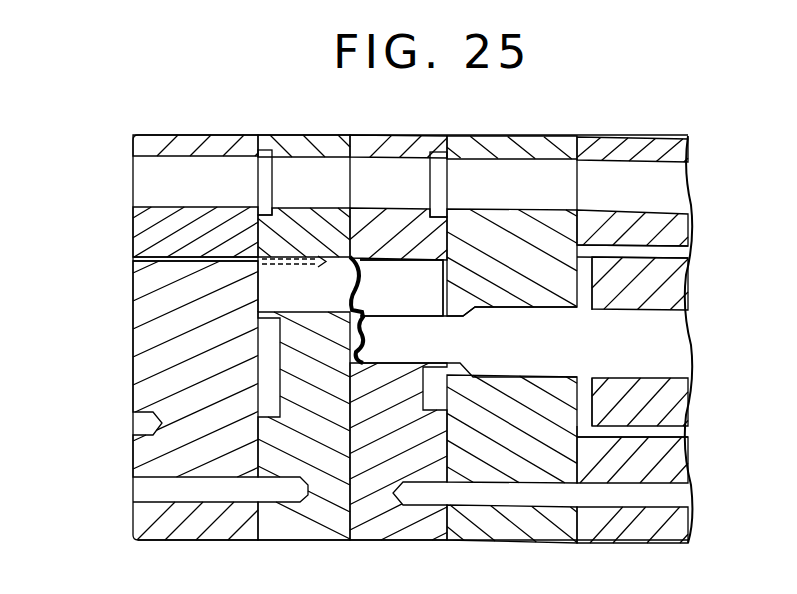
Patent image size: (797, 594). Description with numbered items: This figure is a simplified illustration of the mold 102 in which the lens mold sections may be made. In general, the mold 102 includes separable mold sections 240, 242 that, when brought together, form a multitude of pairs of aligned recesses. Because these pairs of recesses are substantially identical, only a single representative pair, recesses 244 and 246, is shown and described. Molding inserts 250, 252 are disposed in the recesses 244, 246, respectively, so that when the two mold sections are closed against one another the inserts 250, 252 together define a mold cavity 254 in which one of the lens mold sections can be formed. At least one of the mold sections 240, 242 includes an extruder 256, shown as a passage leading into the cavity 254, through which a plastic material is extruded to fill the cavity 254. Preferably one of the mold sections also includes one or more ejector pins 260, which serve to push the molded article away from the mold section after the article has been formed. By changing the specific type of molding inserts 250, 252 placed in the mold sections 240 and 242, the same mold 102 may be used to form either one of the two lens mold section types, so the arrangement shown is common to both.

The mold 102 is at (120, 111).
The mold section 240 is at (313, 134).
The mold section 242 is at (412, 134).
The recess 244 is at (294, 254).
The recess 246 is at (393, 259).
The molding insert 250 is at (257, 262).
The molding insert 252 is at (421, 267).
The mold cavity 254 is at (350, 284).
The extruder 256 is at (612, 353).
The ejector pin 260 is at (161, 254).